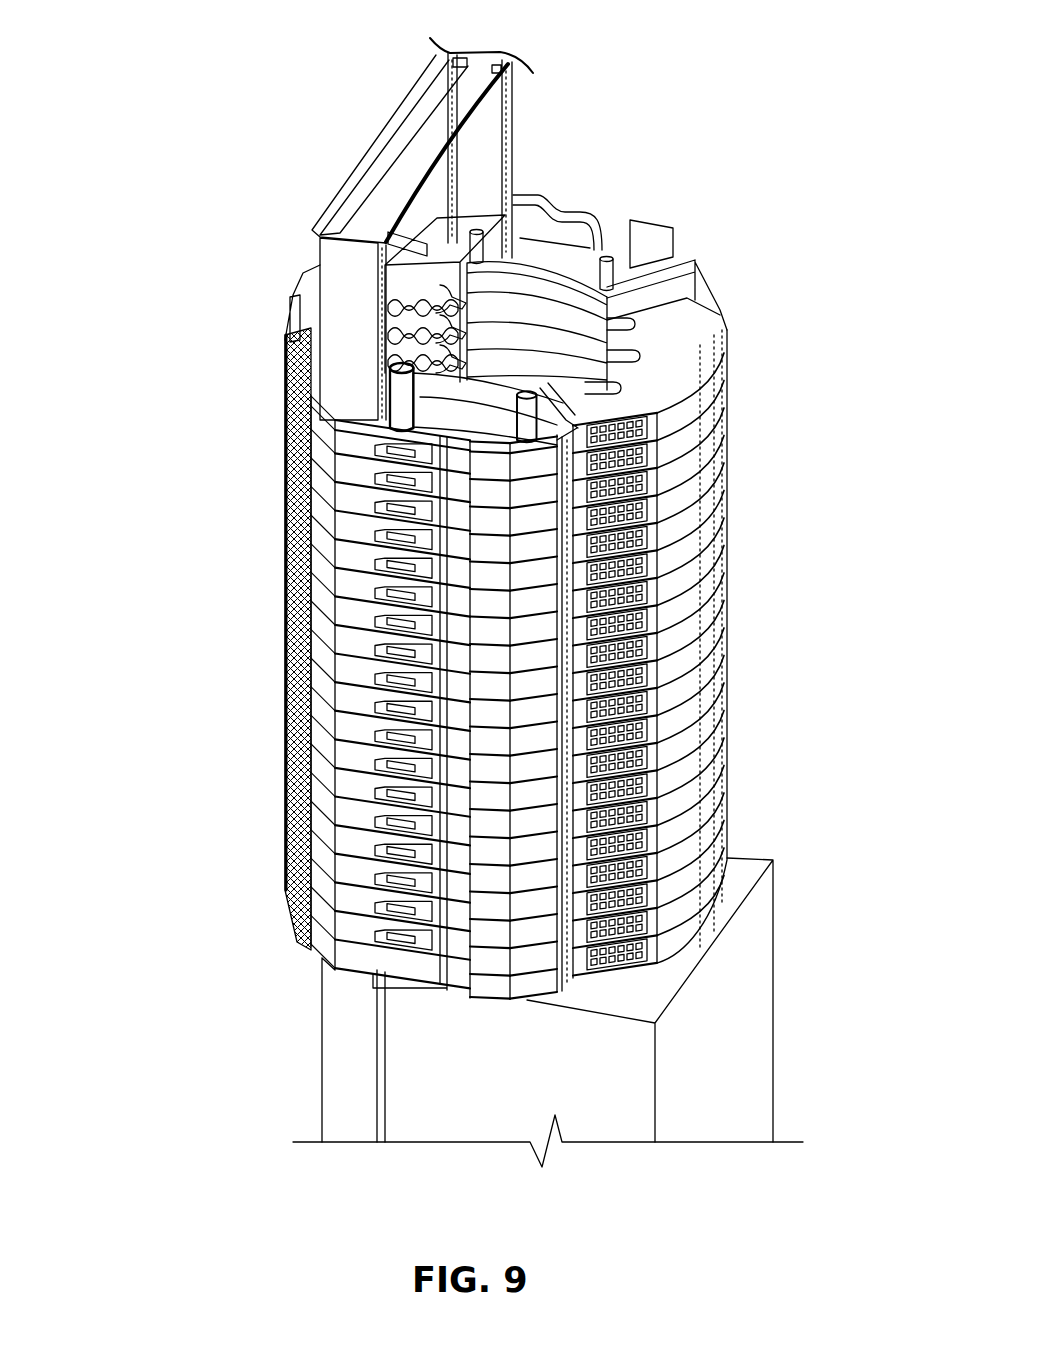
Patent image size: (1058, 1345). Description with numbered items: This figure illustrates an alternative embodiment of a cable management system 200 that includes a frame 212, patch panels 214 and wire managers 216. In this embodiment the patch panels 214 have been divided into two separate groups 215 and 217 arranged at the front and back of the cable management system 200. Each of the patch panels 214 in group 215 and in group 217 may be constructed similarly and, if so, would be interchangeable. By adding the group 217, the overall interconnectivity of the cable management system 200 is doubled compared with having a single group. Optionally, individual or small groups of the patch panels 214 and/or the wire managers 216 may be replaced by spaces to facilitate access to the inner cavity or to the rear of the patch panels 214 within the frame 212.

The cable management system 200 is at (160, 108).
The frame 212 is at (342, 1045).
The patch panel 214 is at (285, 442).
The group 215 is at (270, 711).
The wire manager 216 is at (350, 552).
The group 217 is at (752, 589).